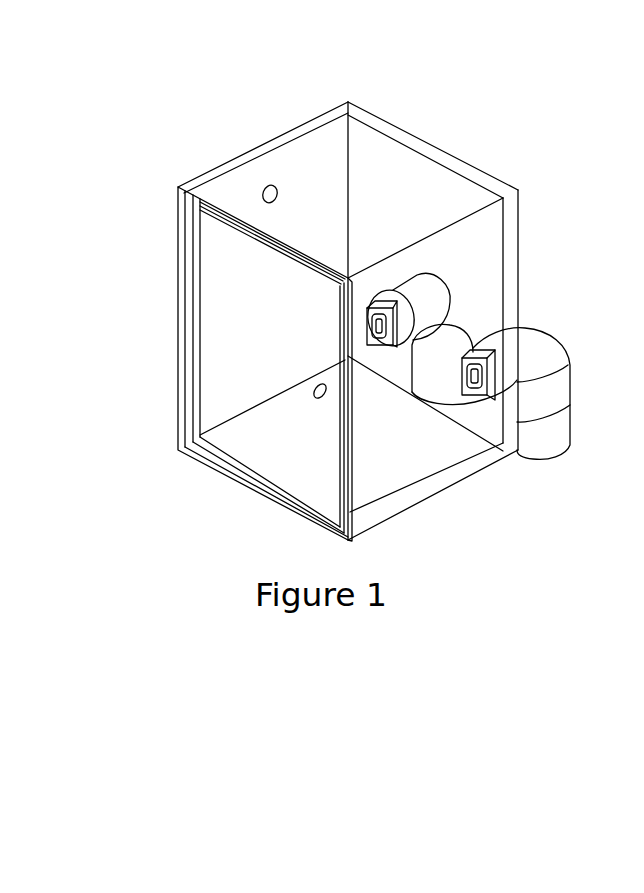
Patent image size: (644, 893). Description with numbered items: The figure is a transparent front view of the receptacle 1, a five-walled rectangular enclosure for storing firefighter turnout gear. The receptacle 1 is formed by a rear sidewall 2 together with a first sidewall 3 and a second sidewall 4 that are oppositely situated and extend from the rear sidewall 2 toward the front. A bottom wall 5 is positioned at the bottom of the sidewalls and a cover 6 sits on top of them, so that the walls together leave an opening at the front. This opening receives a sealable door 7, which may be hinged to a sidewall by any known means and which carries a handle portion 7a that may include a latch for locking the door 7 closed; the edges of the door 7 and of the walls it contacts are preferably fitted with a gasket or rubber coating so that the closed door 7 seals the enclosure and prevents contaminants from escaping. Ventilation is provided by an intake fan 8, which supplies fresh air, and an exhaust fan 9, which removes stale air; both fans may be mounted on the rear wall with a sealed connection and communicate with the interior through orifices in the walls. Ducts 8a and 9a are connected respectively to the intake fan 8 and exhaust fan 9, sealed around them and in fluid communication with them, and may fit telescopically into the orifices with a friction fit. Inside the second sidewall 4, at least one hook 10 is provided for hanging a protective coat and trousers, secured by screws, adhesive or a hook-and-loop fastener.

The receptacle 1 is at (458, 140).
The rear sidewall 2 is at (492, 238).
The first sidewall 3 is at (503, 450).
The second sidewall 4 is at (235, 193).
The bottom wall 5 is at (260, 413).
The cover 6 is at (380, 177).
The sealable door 7 is at (382, 540).
The handle portion 7a is at (313, 397).
The intake fan 8 is at (337, 295).
The intake duct 8a is at (460, 313).
The exhaust fan 9 is at (520, 453).
The exhaust duct 9a is at (570, 372).
The hook 10 is at (277, 185).